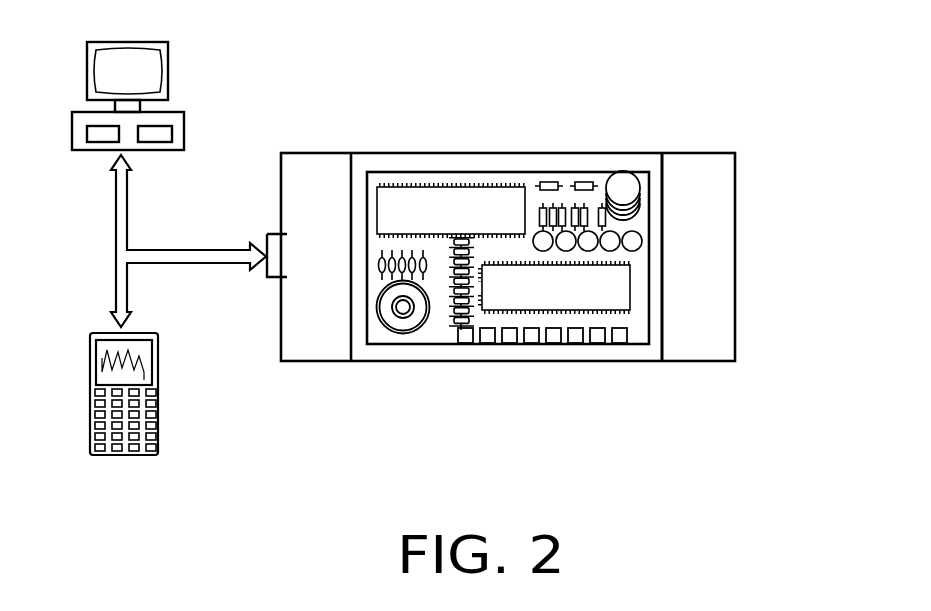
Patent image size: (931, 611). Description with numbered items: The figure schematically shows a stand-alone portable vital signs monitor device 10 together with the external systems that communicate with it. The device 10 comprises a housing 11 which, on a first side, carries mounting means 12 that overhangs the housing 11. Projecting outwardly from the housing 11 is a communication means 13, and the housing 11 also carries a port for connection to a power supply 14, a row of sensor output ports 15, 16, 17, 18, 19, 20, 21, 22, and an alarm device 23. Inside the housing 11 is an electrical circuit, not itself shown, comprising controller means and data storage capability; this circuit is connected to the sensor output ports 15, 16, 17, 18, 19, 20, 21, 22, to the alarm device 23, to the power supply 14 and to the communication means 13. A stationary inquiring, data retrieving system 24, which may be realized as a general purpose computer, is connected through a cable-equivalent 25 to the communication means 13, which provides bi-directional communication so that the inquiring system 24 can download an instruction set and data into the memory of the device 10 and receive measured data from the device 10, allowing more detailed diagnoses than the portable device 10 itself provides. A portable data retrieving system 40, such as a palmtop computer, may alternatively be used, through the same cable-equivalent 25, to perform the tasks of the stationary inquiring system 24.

The portable vital signs monitor device 10 is at (562, 264).
The housing 11 is at (559, 137).
The mounting means 12 is at (684, 338).
The communication means 13 is at (283, 234).
The power supply 14 is at (623, 176).
The sensor output port 15 is at (466, 343).
The sensor output port 16 is at (487, 343).
The sensor output port 17 is at (509, 343).
The sensor output port 18 is at (531, 343).
The sensor output port 19 is at (553, 343).
The sensor output port 20 is at (575, 343).
The sensor output port 21 is at (597, 343).
The sensor output port 22 is at (619, 343).
The alarm device 23 is at (404, 322).
The stationary inquiring data retrieving system 24 is at (108, 72).
The cable-equivalent 25 is at (118, 225).
The portable data retrieving system 40 is at (103, 378).